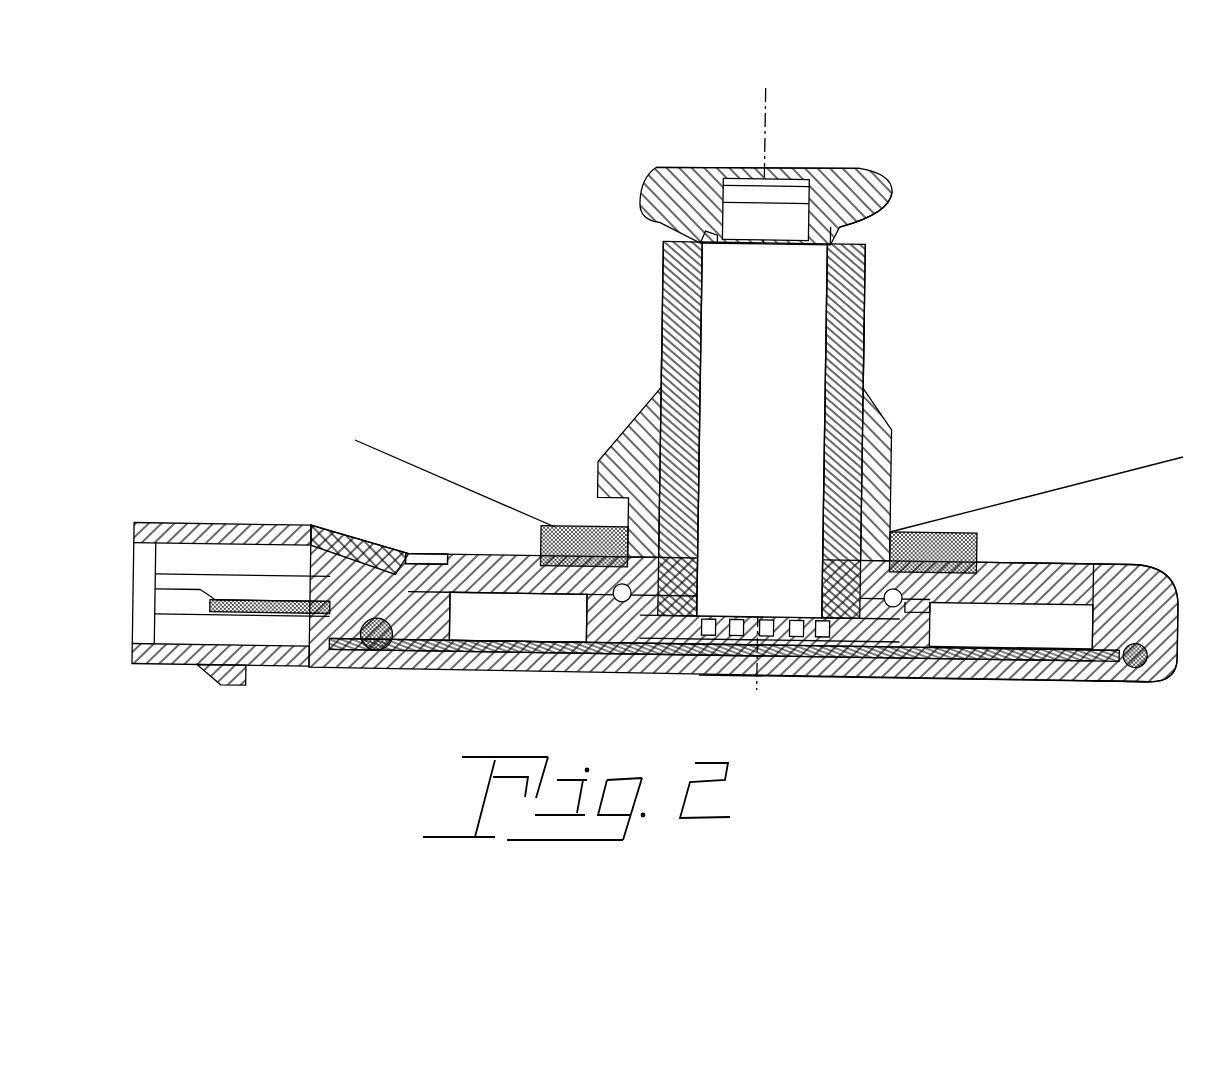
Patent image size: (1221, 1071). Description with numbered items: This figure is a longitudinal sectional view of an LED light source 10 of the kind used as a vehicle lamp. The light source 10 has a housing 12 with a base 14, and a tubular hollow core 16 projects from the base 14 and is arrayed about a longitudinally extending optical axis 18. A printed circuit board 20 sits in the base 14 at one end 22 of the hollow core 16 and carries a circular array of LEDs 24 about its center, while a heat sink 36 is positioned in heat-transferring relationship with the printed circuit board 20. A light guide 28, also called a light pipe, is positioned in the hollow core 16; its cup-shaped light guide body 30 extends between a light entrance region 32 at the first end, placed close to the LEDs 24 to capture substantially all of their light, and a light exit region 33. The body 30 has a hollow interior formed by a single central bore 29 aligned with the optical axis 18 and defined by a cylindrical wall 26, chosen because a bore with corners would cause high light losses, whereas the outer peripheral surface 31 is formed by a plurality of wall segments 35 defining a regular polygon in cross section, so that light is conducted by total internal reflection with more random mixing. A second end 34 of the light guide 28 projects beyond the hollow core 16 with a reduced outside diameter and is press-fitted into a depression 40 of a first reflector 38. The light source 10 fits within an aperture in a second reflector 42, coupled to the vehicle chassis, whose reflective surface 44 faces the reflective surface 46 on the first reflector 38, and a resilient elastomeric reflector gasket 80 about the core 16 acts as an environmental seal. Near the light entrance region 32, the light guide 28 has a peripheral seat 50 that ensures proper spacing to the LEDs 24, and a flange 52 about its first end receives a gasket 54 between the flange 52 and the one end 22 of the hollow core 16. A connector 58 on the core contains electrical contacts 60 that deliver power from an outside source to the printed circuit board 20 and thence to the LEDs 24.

The LED light source 10 is at (1042, 253).
The housing 12 is at (937, 518).
The base 14 is at (1090, 590).
The hollow core 16 is at (900, 455).
The optical axis 18 is at (772, 110).
The printed circuit board 20 is at (556, 668).
The one end 22 is at (582, 600).
The LEDs 24 is at (676, 642).
The cylindrical wall 26 is at (700, 505).
The light guide 28 is at (873, 368).
The central bore 29 is at (745, 465).
The light guide body 30 is at (867, 325).
The outer peripheral surface 31 is at (655, 277).
The light entrance region 32 is at (823, 597).
The light exit region 33 is at (860, 232).
The second end 34 is at (700, 231).
The wall segments 35 is at (658, 356).
The heat sink 36 is at (1013, 680).
The first reflector 38 is at (885, 173).
The depression 40 is at (790, 177).
The second reflector 42 is at (436, 489).
The reflective surface 44 is at (485, 496).
The reflective surface 46 is at (873, 218).
The peripheral seat 50 is at (902, 633).
The flange 52 is at (978, 568).
The gasket 54 is at (597, 642).
The connector 58 is at (248, 522).
The electrical contacts 60 is at (210, 603).
The reflector gasket 80 is at (543, 533).